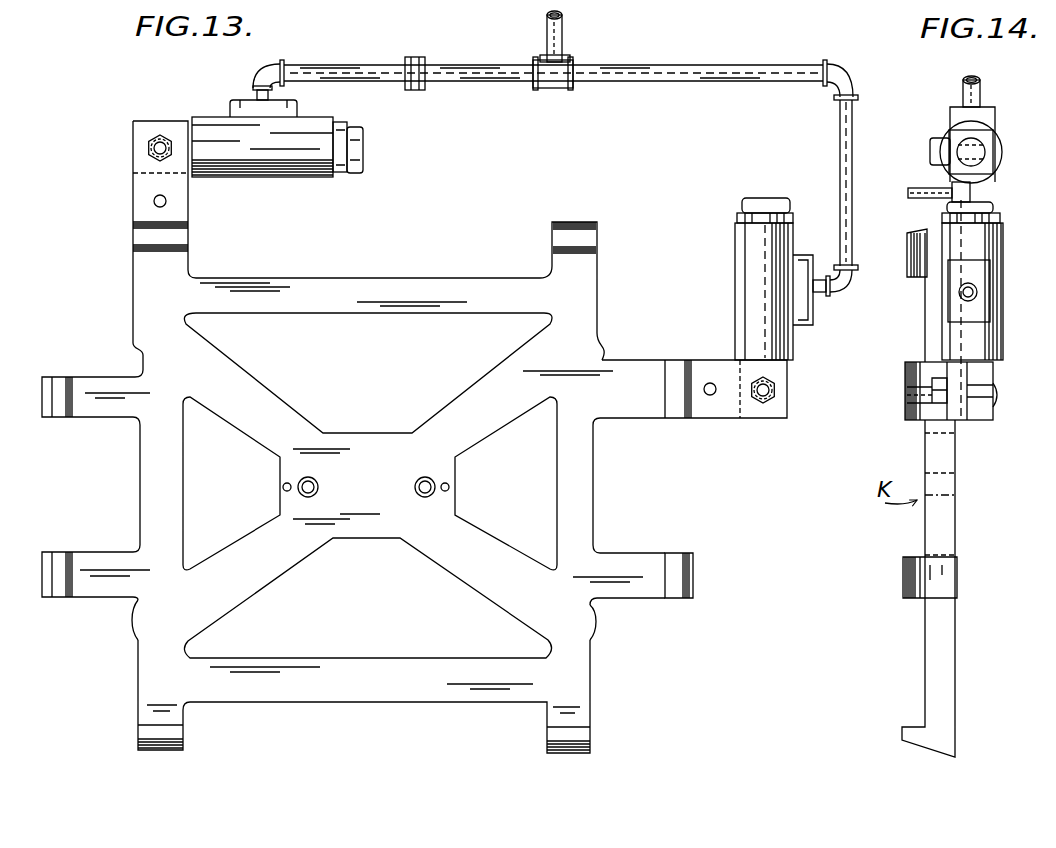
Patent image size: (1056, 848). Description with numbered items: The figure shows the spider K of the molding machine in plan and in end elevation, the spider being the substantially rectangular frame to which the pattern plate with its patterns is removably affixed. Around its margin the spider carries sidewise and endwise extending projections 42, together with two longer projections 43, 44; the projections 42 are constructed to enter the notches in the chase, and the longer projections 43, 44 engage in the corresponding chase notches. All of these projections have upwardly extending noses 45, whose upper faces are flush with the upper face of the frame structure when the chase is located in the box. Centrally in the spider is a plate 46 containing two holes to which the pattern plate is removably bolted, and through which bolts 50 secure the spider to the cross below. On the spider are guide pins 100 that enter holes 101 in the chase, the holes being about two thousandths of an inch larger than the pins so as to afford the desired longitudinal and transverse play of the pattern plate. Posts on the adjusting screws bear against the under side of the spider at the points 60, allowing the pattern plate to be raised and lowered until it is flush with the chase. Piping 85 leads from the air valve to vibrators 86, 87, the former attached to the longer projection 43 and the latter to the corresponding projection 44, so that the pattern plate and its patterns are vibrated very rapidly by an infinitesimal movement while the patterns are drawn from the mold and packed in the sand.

In FIG. 13, the projections 42 is at (599, 260).
In FIG. 14, the projections 42 is at (908, 721).
In FIG. 13, the longer projection 43 is at (192, 214).
In FIG. 14, the longer projection 43 is at (975, 192).
In FIG. 13, the longer projection 44 is at (720, 425).
In FIG. 14, the longer projection 44 is at (918, 425).
In FIG. 13, the noses 45 is at (175, 240).
In FIG. 14, the noses 45 is at (920, 255).
In FIG. 13, the plate 46 is at (353, 438).
In FIG. 14, the plate 46 is at (932, 527).
In FIG. 13, the bolts 50 is at (413, 487).
In FIG. 14, the bolts 50 is at (946, 487).
In FIG. 13, the points 60 is at (591, 343).
In FIG. 13, the piping 85 is at (558, 52).
In FIG. 14, the piping 85 is at (958, 92).
In FIG. 13, the vibrator 86 is at (297, 181).
In FIG. 14, the vibrator 86 is at (939, 172).
In FIG. 13, the vibrator 87 is at (733, 277).
In FIG. 14, the vibrator 87 is at (937, 318).
In FIG. 13, the guide pins 100 is at (146, 200).
In FIG. 13, the holes 101 is at (835, 338).
In FIG. 14, the holes 101 is at (904, 395).